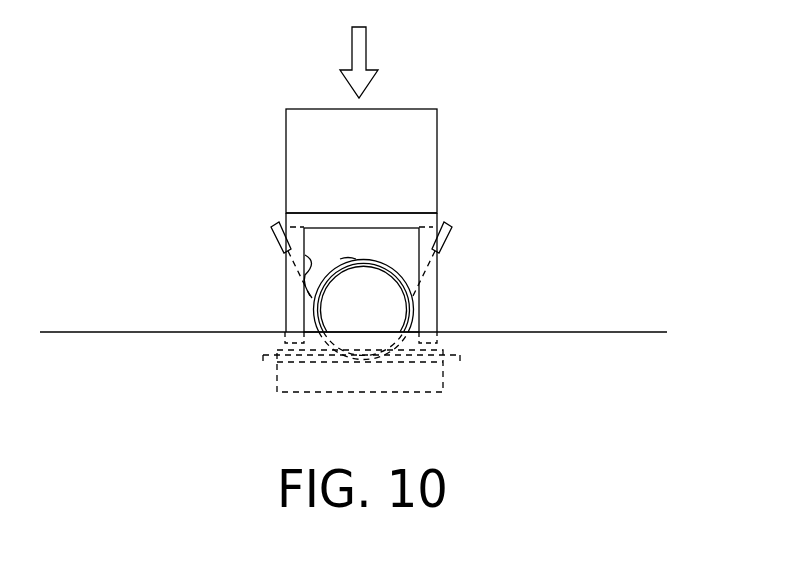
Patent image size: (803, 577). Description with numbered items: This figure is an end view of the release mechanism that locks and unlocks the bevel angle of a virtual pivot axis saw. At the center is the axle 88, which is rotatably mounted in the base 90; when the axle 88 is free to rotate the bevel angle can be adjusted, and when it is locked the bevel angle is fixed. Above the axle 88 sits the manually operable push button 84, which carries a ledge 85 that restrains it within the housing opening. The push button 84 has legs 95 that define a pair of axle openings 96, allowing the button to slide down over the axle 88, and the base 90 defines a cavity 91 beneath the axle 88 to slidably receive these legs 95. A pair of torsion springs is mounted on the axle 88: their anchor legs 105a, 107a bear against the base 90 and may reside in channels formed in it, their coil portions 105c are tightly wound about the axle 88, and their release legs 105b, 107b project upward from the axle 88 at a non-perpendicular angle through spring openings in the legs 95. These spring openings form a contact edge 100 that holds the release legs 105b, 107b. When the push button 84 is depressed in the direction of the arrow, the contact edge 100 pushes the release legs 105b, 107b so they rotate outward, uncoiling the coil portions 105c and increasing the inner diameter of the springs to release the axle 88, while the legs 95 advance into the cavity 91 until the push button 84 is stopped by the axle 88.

The push button 84 is at (410, 122).
The ledge 85 is at (375, 213).
The axle 88 is at (378, 300).
The base 90 is at (595, 332).
The cavity 91 is at (433, 380).
The legs 95 is at (293, 300).
The axle openings 96 is at (303, 272).
The contact edge 100 is at (300, 222).
The anchor leg 105a is at (457, 350).
The release leg 105b is at (277, 233).
The coil portion 105c is at (349, 268).
The anchor leg 107a is at (268, 358).
The release leg 107b is at (445, 240).